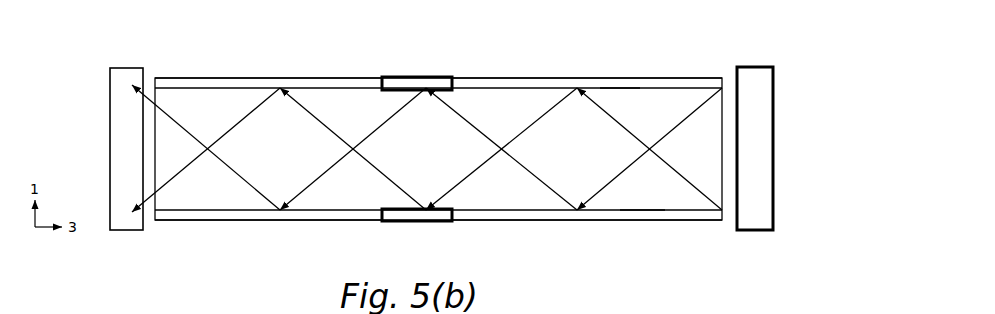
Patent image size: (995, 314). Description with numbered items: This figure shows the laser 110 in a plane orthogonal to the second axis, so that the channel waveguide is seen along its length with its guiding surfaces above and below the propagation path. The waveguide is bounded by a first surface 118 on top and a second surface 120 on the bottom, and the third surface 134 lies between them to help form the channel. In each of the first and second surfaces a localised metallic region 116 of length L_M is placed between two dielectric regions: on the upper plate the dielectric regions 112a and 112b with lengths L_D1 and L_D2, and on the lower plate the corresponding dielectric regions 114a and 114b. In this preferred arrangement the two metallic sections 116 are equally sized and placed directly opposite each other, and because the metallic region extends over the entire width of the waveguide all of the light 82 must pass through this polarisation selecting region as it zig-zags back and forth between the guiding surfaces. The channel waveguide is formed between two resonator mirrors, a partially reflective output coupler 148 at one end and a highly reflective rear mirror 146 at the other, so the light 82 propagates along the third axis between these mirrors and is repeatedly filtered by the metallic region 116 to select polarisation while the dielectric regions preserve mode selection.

The laser 110 is at (684, 66).
The dielectric region 112a is at (308, 78).
The dielectric region 112b is at (527, 78).
The dielectric region 114a is at (272, 220).
The dielectric region 114b is at (535, 220).
The metallic region 116 is at (415, 77).
The first surface 118 is at (610, 90).
The second surface 120 is at (630, 208).
The third surface 134 is at (298, 161).
The light 82 is at (168, 182).
The partially reflective output coupler 148 is at (122, 231).
The highly reflective rear mirror 146 is at (752, 231).